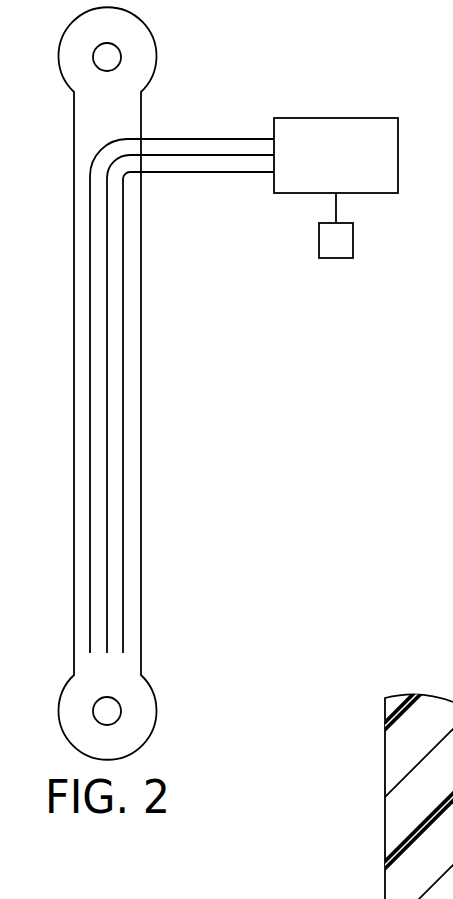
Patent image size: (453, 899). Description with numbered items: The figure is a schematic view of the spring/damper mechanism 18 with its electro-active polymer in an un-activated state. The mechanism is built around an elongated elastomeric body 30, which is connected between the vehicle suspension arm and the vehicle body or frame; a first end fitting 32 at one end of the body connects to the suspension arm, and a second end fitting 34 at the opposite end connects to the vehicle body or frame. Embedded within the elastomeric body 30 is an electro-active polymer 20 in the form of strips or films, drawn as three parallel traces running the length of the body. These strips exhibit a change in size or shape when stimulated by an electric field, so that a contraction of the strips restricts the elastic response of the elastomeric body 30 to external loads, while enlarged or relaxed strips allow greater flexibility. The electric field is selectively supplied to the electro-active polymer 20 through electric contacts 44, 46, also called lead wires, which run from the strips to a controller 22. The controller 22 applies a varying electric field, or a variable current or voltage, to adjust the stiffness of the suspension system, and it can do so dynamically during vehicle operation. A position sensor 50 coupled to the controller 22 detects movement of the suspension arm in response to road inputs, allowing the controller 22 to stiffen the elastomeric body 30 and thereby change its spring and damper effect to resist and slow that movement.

The spring/damper mechanism 18 is at (158, 383).
The electro-active polymer 20 is at (151, 371).
The controller 22 is at (322, 168).
The elastomeric body 30 is at (158, 373).
The first end fitting 32 is at (156, 711).
The second end fitting 34 is at (157, 58).
The electric contact 44 is at (190, 371).
The electric contact 46 is at (193, 139).
The position sensor 50 is at (323, 252).